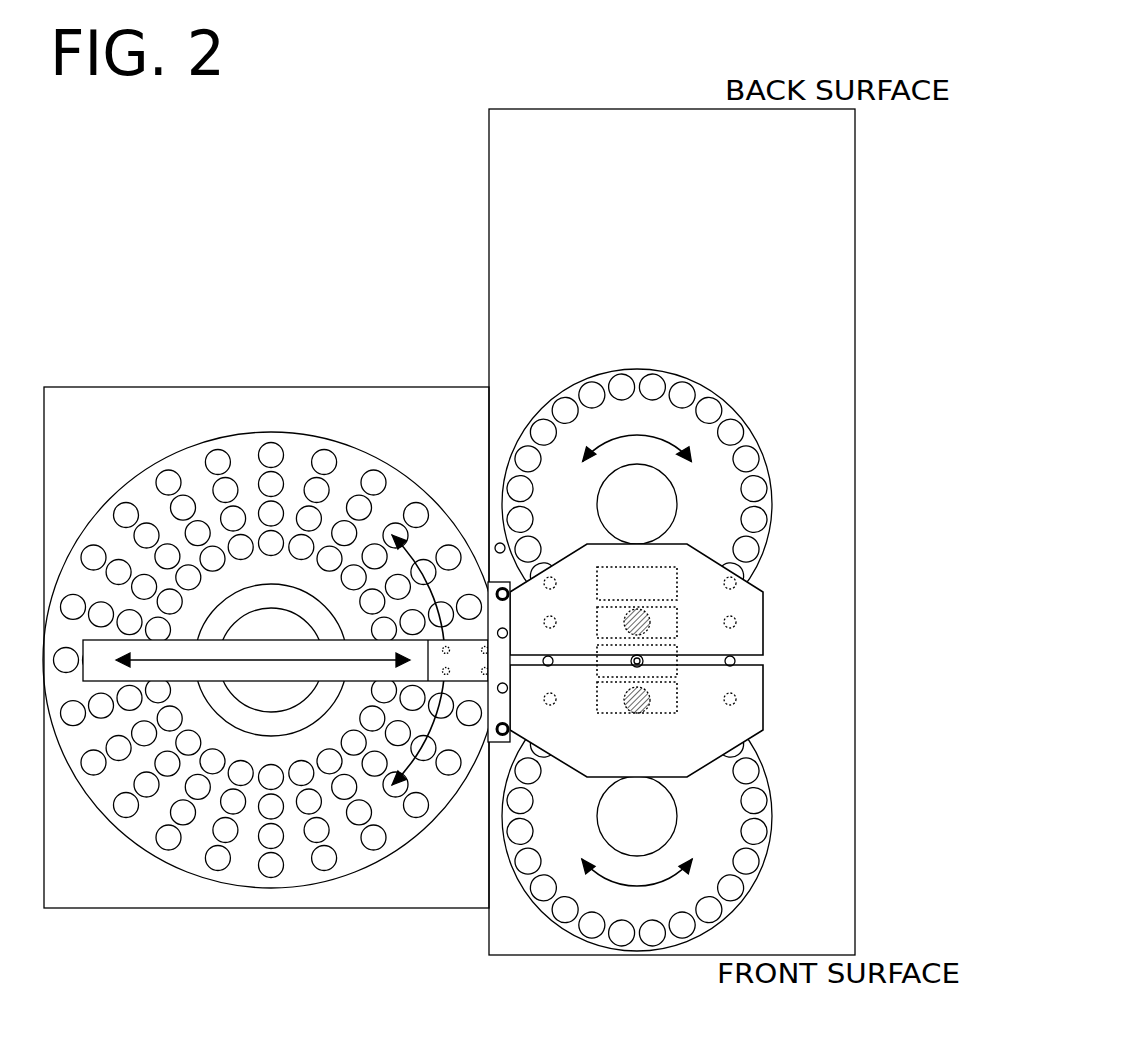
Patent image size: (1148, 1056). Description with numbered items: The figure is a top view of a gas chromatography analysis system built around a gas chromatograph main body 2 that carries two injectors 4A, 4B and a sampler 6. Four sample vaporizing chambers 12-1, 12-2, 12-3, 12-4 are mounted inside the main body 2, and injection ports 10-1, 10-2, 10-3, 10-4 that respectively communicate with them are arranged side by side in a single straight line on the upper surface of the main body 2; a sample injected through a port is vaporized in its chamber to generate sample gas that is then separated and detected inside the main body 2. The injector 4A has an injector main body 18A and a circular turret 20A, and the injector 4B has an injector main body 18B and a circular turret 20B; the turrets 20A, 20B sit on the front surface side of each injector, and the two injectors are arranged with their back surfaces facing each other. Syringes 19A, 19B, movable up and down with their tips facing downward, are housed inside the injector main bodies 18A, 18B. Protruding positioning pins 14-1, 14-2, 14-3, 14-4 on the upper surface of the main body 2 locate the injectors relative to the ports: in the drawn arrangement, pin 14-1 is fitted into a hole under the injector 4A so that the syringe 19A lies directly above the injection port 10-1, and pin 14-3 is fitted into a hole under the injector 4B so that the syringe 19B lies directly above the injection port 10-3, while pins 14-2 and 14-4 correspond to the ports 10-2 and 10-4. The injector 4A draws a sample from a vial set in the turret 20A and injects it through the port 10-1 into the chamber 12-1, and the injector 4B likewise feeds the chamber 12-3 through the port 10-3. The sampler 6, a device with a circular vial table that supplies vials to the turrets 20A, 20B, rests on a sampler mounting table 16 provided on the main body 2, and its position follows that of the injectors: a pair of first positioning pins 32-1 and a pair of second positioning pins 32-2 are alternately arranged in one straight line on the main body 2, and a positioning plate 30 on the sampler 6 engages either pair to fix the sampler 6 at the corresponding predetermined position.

The gas chromatograph main body 2 is at (670, 127).
The sampler mounting table 16 is at (233, 395).
The sampler 6 is at (245, 888).
The positioning plate 30 is at (497, 578).
The first positioning pins 32-1 is at (500, 737).
The second positioning pins 32-2 is at (500, 545).
The injector 4A is at (783, 850).
The injector 4B is at (763, 423).
The circular turret 20A is at (752, 887).
The circular turret 20B is at (767, 472).
The injector main body 18A is at (703, 742).
The injector main body 18B is at (662, 553).
The injection port 10-1 is at (650, 693).
The injection port 10-2 is at (647, 657).
The injection port 10-3 is at (736, 583).
The injection port 10-4 is at (640, 578).
The positioning pin 14-1 is at (737, 699).
The positioning pin 14-2 is at (737, 661).
The positioning pin 14-3 is at (737, 622).
The positioning pin 14-4 is at (737, 585).
The syringe 19A is at (746, 723).
The syringe 19B is at (746, 597).
The sample vaporizing chamber 12-1 is at (613, 717).
The sample vaporizing chamber 12-2 is at (595, 670).
The sample vaporizing chamber 12-3 is at (590, 622).
The sample vaporizing chamber 12-4 is at (617, 567).